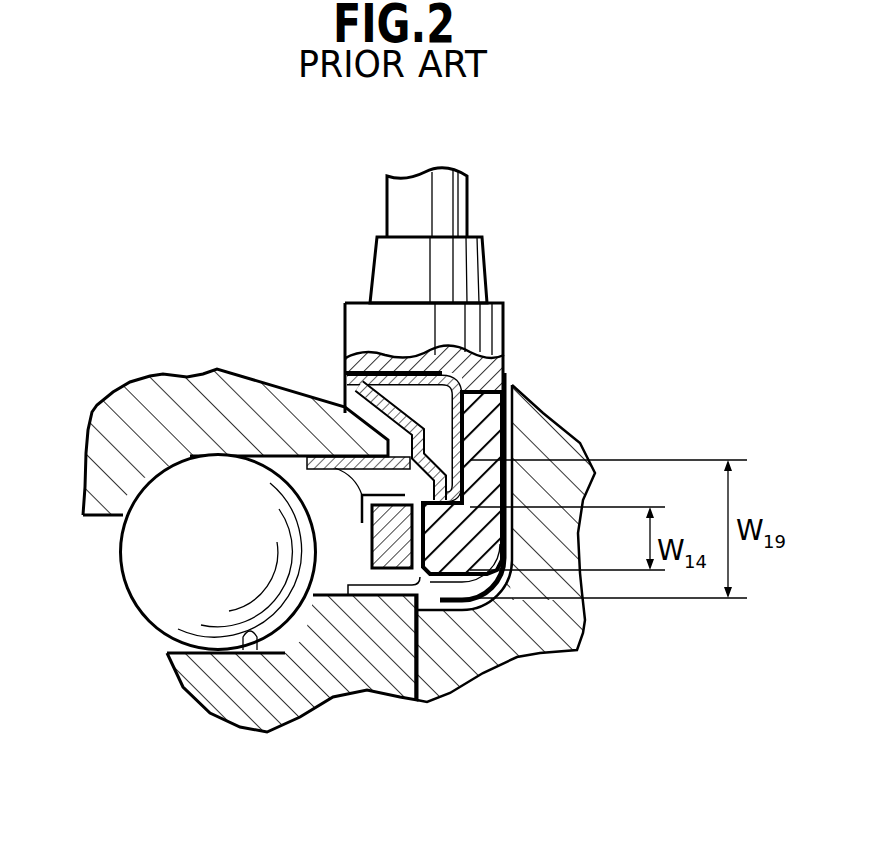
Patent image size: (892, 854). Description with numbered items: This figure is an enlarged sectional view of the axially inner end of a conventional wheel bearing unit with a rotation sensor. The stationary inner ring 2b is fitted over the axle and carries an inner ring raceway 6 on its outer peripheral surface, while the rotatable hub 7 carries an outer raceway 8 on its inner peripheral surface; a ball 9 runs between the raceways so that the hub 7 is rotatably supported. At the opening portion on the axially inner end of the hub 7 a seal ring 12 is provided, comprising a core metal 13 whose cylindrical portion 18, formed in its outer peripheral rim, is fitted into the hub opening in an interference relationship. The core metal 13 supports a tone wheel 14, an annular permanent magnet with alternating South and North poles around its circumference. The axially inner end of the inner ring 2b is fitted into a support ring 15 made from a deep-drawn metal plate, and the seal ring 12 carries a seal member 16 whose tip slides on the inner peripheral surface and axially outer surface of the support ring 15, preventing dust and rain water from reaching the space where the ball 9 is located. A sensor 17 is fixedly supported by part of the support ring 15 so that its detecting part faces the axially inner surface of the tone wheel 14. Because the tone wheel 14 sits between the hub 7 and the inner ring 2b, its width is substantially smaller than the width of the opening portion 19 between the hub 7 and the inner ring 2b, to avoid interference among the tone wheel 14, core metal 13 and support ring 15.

The inner ring 2b is at (200, 685).
The inner ring raceway 6 is at (243, 650).
The hub 7 is at (105, 432).
The outer raceway 8 is at (195, 462).
The ball 9 is at (132, 598).
The seal ring 12 is at (305, 455).
The core metal 13 is at (352, 400).
The tone wheel 14 is at (385, 568).
The support ring 15 is at (503, 378).
The seal member 16 is at (495, 405).
The sensor 17 is at (490, 435).
The cylindrical portion 18 is at (282, 470).
The opening portion 19 is at (342, 583).